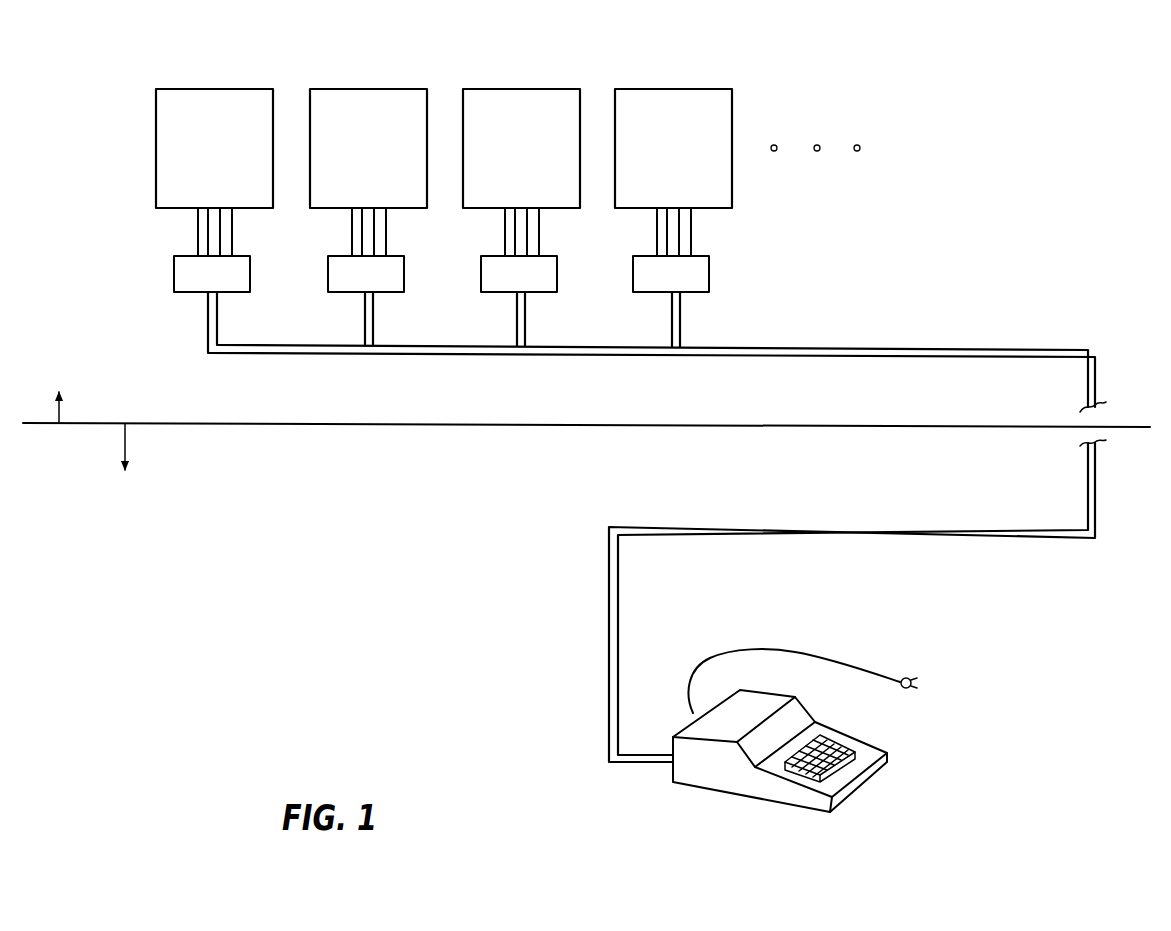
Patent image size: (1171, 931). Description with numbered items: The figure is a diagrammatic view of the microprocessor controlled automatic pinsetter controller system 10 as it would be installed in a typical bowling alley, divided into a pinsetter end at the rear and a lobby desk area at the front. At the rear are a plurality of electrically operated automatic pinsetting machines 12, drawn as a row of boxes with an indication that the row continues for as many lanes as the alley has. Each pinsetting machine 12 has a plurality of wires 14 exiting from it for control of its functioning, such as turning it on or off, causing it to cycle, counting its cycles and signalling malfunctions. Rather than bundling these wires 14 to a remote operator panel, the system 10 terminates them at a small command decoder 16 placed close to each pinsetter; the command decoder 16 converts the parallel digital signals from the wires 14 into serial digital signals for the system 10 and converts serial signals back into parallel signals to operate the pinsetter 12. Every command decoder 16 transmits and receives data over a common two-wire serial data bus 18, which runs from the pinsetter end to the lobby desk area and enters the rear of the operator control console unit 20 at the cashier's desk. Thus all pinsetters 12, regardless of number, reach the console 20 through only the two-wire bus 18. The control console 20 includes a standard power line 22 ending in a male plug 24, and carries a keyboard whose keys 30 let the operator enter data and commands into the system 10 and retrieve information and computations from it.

The microprocessor controlled automatic pinsetter controller system 10 is at (619, 456).
The automatic pinsetting machine 12 is at (156, 111).
The wires 14 is at (166, 230).
The command decoder 16 is at (710, 283).
The serial data bus 18 is at (1003, 350).
The operator control console unit 20 is at (875, 734).
The power line 22 is at (781, 650).
The male plug 24 is at (913, 677).
The keys 30 is at (789, 776).